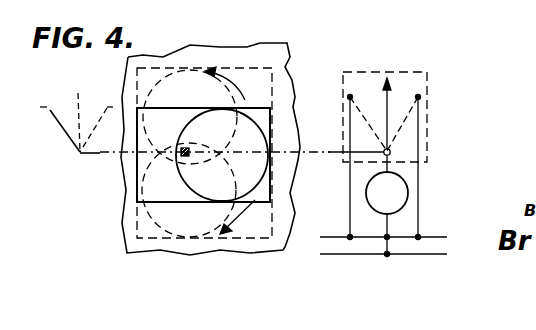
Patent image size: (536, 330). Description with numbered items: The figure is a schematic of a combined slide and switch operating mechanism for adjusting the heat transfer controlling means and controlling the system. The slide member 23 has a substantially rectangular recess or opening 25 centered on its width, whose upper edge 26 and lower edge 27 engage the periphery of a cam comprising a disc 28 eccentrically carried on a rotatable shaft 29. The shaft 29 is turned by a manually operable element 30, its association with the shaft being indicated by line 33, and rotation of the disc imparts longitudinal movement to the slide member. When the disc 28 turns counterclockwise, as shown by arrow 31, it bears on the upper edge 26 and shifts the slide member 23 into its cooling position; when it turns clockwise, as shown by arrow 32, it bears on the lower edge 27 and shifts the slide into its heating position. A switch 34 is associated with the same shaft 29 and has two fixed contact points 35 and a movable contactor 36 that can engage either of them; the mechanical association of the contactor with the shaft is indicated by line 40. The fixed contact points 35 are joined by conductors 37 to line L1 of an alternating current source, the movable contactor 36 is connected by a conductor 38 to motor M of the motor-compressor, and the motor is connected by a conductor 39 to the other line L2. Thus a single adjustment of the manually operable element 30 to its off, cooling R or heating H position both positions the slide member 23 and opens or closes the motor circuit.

The slide member 23 is at (285, 63).
The rectangular recess or opening 25 is at (270, 115).
The upper edge 26 is at (245, 66).
The lower edge 27 is at (186, 201).
The disc 28 is at (258, 158).
The rotatable shaft 29 is at (182, 160).
The manually operable element 30 is at (73, 115).
The arrow 31 is at (240, 97).
The arrow 32 is at (241, 220).
The line 33 is at (98, 154).
The switch 34 is at (420, 77).
The fixed contact points 35 is at (348, 94).
The movable contactor 36 is at (389, 100).
The conductors 37 is at (350, 203).
The conductor 38 is at (402, 153).
The conductor 39 is at (387, 222).
The line 40 is at (337, 151).
The line L1 is at (447, 237).
The line L2 is at (447, 254).